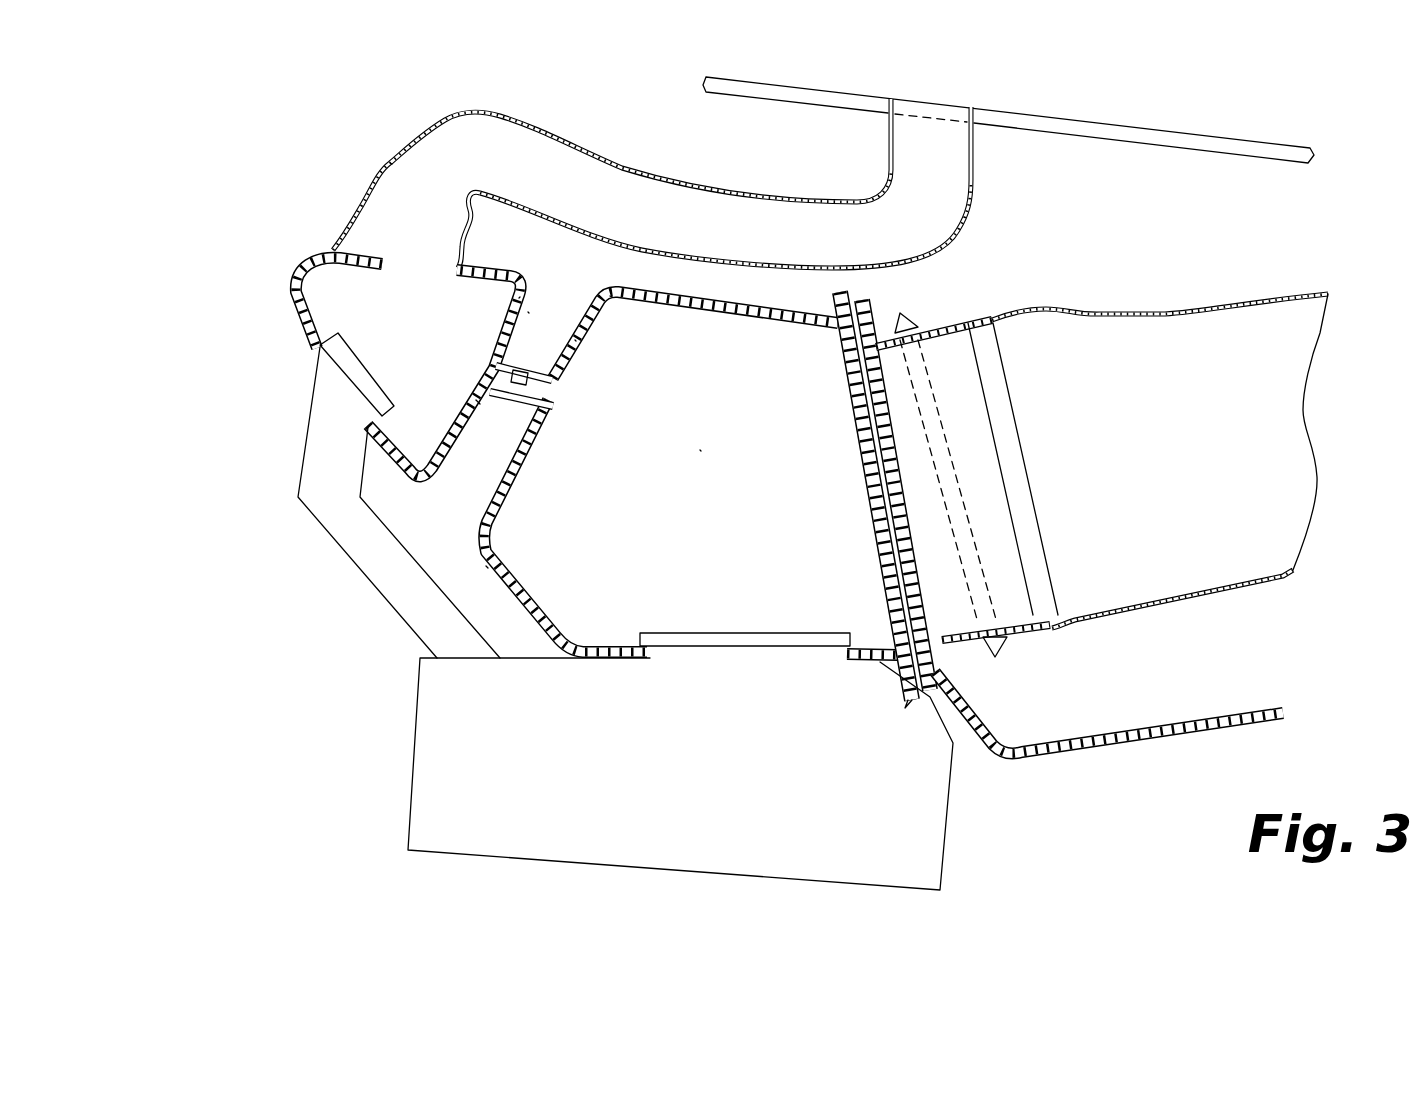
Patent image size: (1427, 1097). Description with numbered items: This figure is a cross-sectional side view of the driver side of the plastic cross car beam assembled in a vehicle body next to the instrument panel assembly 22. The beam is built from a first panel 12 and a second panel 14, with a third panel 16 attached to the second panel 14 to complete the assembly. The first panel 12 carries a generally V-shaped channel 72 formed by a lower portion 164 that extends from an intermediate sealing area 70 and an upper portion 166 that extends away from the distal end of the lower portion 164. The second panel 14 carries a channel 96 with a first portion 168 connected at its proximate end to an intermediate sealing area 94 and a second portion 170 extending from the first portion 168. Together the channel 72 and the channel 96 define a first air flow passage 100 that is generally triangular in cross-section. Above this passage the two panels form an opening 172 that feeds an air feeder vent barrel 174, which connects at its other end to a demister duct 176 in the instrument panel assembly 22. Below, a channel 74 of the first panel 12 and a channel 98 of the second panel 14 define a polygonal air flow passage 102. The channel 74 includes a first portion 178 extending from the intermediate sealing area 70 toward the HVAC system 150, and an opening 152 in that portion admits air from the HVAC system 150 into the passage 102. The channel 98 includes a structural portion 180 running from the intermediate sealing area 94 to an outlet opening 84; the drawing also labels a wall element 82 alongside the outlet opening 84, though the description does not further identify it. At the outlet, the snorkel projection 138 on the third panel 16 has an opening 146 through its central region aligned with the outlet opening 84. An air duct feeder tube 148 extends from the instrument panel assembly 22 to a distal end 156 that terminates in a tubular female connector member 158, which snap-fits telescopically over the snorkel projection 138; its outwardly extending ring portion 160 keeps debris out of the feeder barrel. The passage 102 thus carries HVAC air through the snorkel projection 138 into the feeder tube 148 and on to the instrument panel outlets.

The first panel 12 is at (489, 563).
The second panel 14 is at (722, 294).
The third panel 16 is at (860, 302).
The instrument panel assembly 22 is at (1125, 122).
The intermediate sealing area 70 is at (507, 398).
The channel 72 is at (400, 470).
The channel 74 is at (562, 642).
The side wall lower portion 82 is at (885, 660).
The outlet opening 84 is at (834, 348).
The intermediate sealing area 94 is at (545, 363).
The channel 96 is at (522, 296).
The channel 98 is at (612, 300).
The first air flow passage 100 is at (387, 345).
The air flow passage 102 is at (674, 474).
The snorkel projection 138 is at (973, 660).
The opening 146 is at (973, 417).
The air duct feeder tube 148 is at (1114, 423).
The HVAC system 150 is at (418, 720).
The opening 152 is at (335, 367).
The distal end 156 is at (996, 330).
The tubular female connector member 158 is at (1016, 643).
The ring portion 160 is at (898, 322).
The lower portion 164 is at (480, 425).
The upper portion 166 is at (294, 277).
The first portion 168 is at (530, 311).
The second portion 170 is at (493, 266).
The opening 172 is at (388, 262).
The air feeder vent barrel 174 is at (888, 140).
The demister duct 176 is at (953, 105).
The first portion 178 is at (545, 445).
The structural portion 180 is at (630, 285).